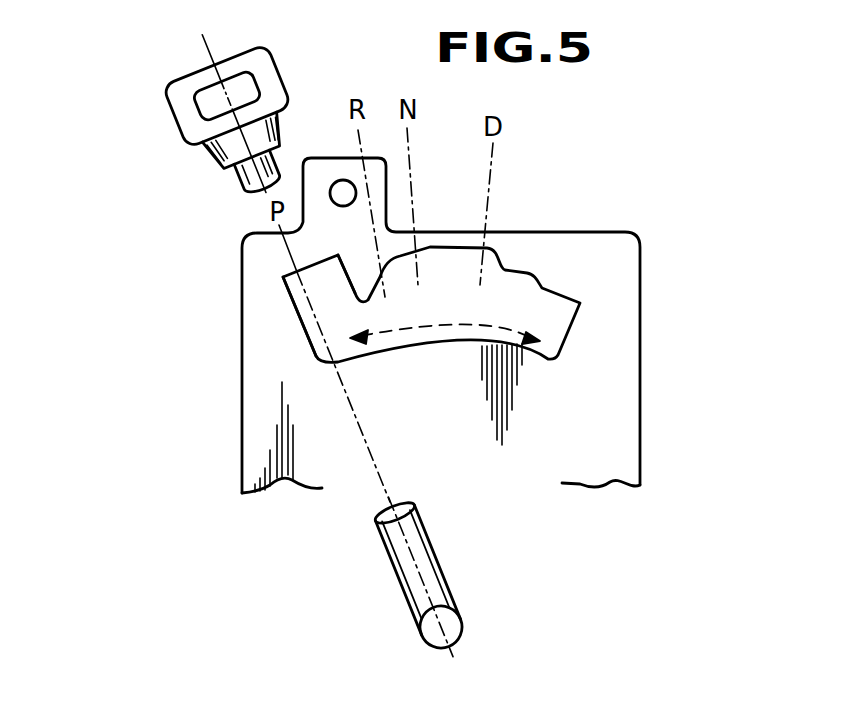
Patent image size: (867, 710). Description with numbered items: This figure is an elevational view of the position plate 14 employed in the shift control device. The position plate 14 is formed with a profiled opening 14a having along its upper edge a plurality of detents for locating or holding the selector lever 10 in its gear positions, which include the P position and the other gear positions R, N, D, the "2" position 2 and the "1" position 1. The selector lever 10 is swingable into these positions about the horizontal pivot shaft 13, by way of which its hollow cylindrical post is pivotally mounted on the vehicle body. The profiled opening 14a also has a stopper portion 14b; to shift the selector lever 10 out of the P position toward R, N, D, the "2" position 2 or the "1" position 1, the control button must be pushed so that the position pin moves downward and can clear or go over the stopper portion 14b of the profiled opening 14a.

The selector lever 10 is at (170, 136).
The position plate 14 is at (646, 291).
The profiled opening 14a is at (306, 327).
The stopper portion 14b is at (357, 296).
The "2" position 2 is at (513, 322).
The horizontal pivot shaft 13 is at (447, 617).
The "1" position 1 is at (563, 330).